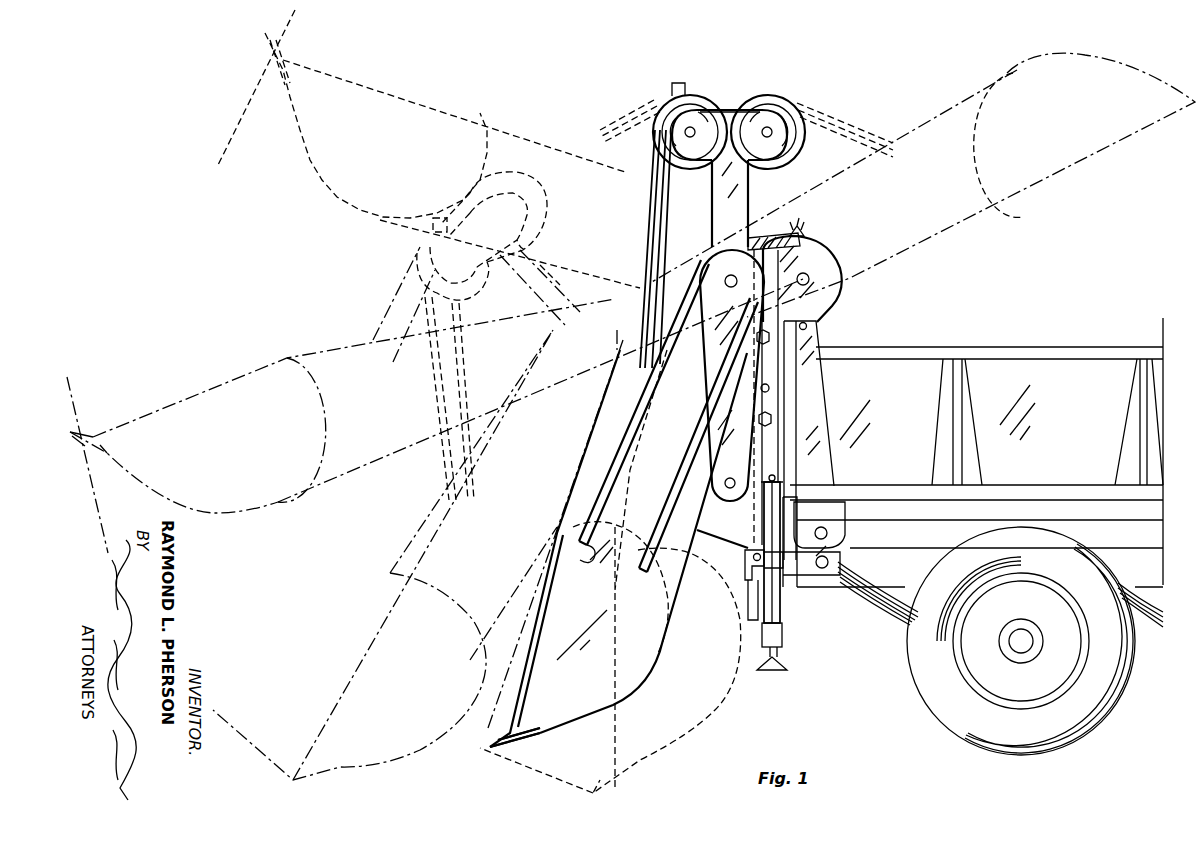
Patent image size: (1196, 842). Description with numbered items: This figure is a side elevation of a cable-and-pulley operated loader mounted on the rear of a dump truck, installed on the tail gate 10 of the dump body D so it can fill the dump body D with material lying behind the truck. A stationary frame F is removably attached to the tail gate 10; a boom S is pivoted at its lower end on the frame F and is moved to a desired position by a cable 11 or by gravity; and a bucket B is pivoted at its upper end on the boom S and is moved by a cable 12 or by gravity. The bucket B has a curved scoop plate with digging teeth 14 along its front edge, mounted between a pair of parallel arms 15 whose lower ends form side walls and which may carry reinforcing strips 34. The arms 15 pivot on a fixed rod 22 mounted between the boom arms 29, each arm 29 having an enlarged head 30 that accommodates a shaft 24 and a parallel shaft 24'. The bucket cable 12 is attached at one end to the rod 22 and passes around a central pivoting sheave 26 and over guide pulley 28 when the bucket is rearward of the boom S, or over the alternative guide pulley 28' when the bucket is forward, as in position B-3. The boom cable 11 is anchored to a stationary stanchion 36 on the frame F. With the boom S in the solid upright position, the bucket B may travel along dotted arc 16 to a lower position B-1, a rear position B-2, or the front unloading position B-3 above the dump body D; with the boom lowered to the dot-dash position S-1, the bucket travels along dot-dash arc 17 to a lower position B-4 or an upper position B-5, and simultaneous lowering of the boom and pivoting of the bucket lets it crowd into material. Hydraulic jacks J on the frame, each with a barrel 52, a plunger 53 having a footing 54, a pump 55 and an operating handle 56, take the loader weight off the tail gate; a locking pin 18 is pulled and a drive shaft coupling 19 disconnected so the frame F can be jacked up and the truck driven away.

The tail gate 10 is at (783, 421).
The cable 11 is at (768, 240).
The cable 12 is at (648, 236).
The digging teeth 14 is at (506, 742).
The parallel arms or plates 15 is at (672, 580).
The dotted arc 16 is at (532, 776).
The dot-dash arc 17 is at (88, 494).
The locking pin 18 is at (771, 388).
The drive shaft coupling 19 is at (795, 536).
The fixed rod or shaft 22 is at (735, 262).
The shaft 24 is at (706, 140).
The second shaft 24' is at (754, 140).
The central pivoting sheave 26 is at (672, 88).
The guide pulley 28 is at (690, 119).
The alternative guide pulley 28' is at (773, 119).
The arms or plates 29 is at (732, 190).
The enlarged upper end or head 30 is at (752, 140).
The reinforcing bars or strips 34 is at (728, 352).
The stationary clip or stanchion 36 is at (806, 234).
The barrel 52 is at (781, 590).
The piston or plunger 53 is at (783, 652).
The footing 54 is at (788, 668).
The pump 55 is at (748, 620).
The handle 56 is at (752, 562).
The bucket or scoop B is at (574, 711).
The lower dotted position of bucket B-1 is at (704, 718).
The rear dotted position of bucket B-2 is at (332, 177).
The front dotted position of bucket B-3 is at (1127, 160).
The lower dot-dash position of bucket B-4 is at (350, 673).
The upper dot-dash position of bucket B-5 is at (138, 414).
The dump body D is at (1024, 390).
The stationary support or frame F is at (850, 292).
The hydraulic jacks J is at (790, 608).
The pivotal support or boom S is at (756, 190).
The lower dotted position of boom S-1 is at (560, 286).